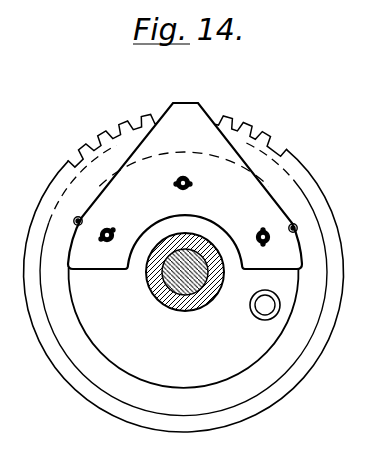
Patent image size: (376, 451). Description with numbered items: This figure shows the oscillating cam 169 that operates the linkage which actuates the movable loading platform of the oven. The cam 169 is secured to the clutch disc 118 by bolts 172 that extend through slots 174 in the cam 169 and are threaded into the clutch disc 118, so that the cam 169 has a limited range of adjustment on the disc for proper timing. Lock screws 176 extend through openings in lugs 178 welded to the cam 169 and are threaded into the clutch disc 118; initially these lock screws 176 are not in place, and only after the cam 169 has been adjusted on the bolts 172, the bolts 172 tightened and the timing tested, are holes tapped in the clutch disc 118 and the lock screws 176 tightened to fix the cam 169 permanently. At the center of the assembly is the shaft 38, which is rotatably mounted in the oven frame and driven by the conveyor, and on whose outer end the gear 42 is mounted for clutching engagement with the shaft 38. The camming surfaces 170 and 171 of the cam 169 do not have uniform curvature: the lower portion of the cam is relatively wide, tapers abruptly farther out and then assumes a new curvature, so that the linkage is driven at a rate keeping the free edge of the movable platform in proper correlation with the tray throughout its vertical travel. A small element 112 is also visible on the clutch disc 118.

The shaft 38 is at (198, 290).
The gear 42 is at (85, 169).
The bushing 112 is at (258, 307).
The clutch disc 118 is at (122, 360).
The oscillating cam 169 is at (188, 120).
The camming surface 170 is at (147, 127).
The camming surface 171 is at (238, 140).
The bolts 172 is at (178, 188).
The slots 174 is at (177, 184).
The lock screws 176 is at (76, 219).
The lugs 178 is at (77, 222).